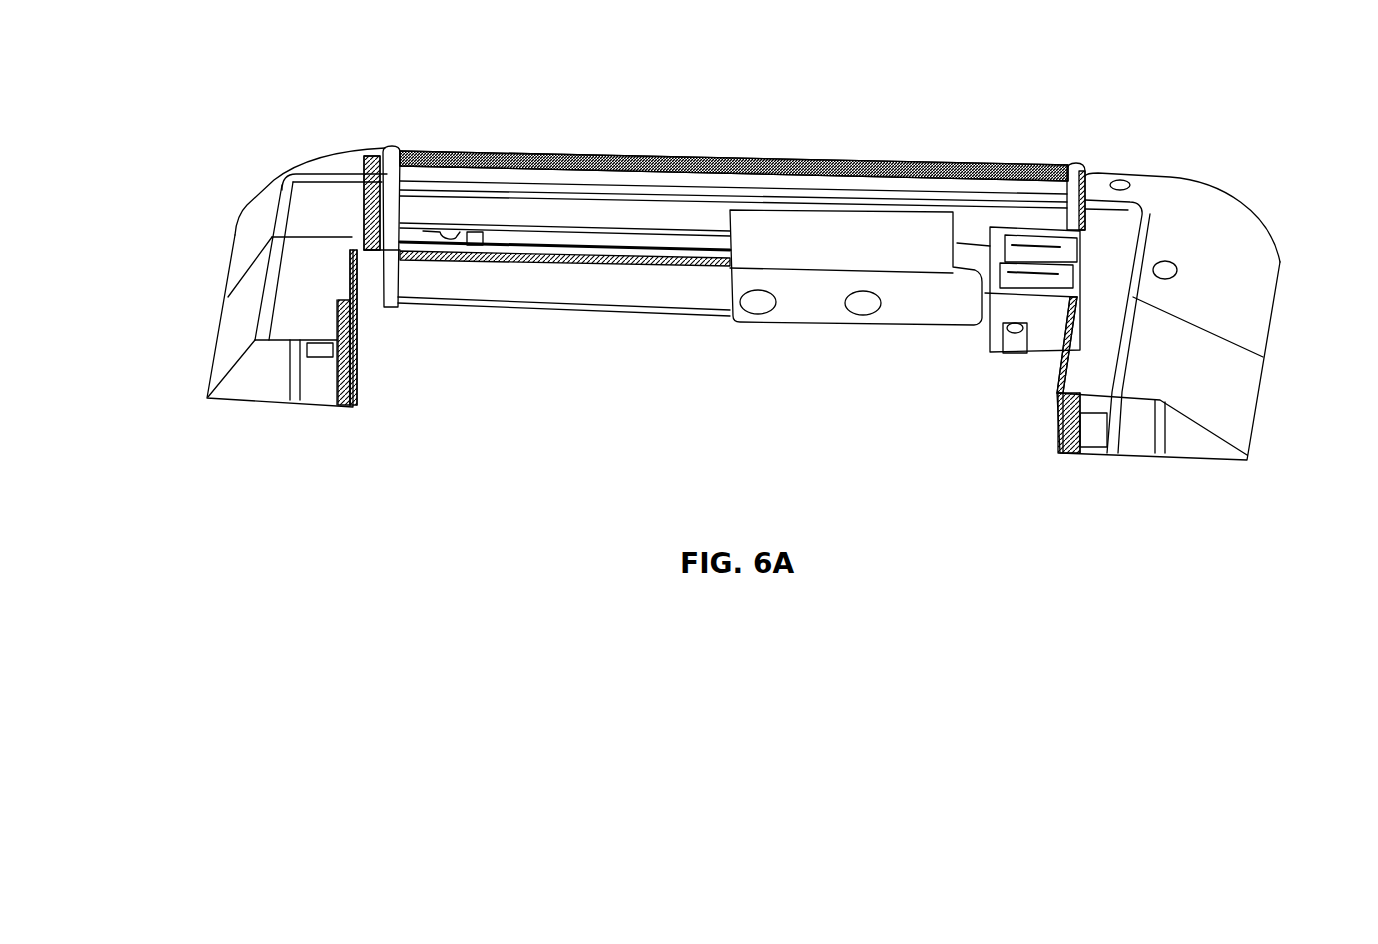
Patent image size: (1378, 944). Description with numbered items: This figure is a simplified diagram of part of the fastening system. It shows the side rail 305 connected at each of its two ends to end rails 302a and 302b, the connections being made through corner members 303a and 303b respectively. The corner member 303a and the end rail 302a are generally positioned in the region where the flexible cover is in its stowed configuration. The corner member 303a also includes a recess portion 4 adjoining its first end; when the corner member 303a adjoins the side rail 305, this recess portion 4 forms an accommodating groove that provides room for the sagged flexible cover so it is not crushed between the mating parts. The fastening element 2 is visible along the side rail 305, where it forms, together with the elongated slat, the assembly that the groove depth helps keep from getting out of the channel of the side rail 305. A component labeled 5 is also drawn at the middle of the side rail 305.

The fastening element 2 is at (765, 160).
The recess portion 4 is at (397, 158).
The mounting bracket 5 is at (960, 303).
The side rail 305 is at (543, 218).
The corner member 303a is at (347, 163).
The end rail 302a is at (310, 295).
The corner member 303b is at (1182, 220).
The end rail 302b is at (1210, 390).